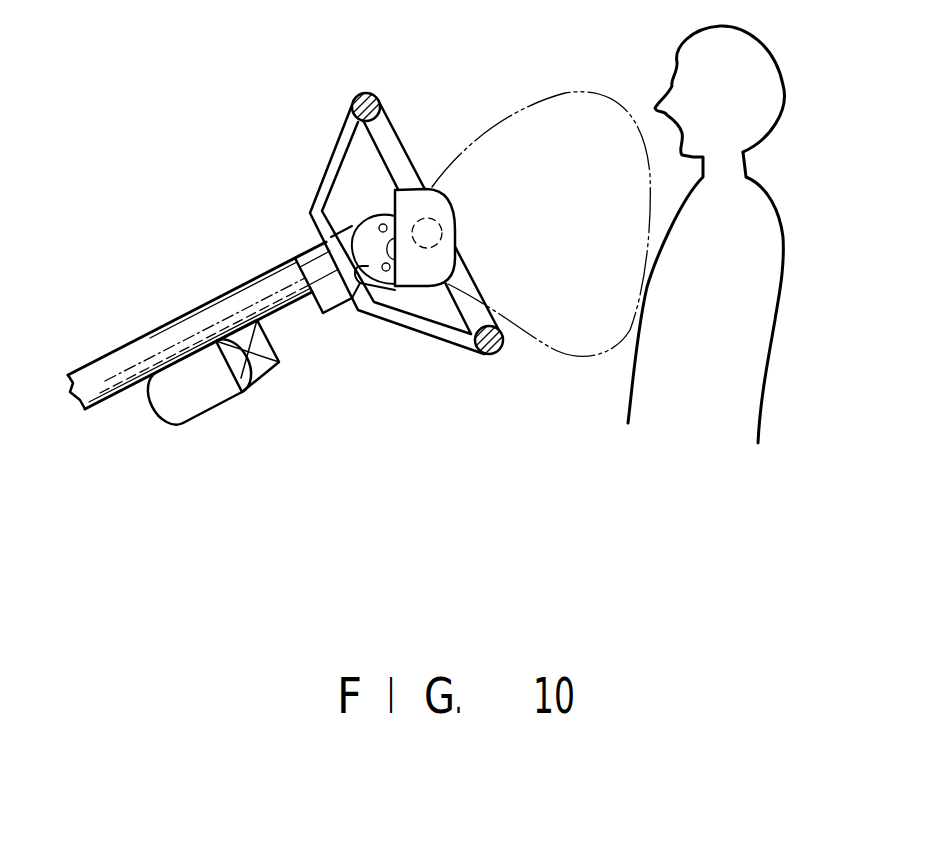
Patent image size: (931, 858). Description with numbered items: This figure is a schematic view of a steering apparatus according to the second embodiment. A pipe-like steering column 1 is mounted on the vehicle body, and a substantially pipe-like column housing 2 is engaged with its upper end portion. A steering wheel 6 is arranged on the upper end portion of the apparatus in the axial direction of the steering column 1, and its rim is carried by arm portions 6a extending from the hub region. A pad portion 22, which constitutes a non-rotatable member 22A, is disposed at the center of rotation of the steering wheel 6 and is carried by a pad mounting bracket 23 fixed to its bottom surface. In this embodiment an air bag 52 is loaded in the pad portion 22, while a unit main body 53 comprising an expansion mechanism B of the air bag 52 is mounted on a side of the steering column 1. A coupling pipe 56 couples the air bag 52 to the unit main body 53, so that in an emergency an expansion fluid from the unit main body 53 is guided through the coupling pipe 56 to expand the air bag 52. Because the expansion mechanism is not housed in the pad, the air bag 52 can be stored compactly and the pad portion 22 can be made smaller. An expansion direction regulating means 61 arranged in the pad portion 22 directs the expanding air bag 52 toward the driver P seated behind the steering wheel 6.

The steering column 1 is at (158, 340).
The column housing 2 is at (310, 268).
The steering wheel 6 is at (366, 92).
The support arm 6a is at (333, 157).
The pad portion 22 is at (413, 189).
The non-rotatable member 22A is at (440, 219).
The pad mounting bracket 23 is at (373, 285).
The air bag 52 is at (422, 253).
The unit main body 53 is at (215, 415).
The coupling pipe 56 is at (274, 340).
The expansion direction regulating means 61 is at (368, 210).
The expansion mechanism B is at (243, 400).
The driver P is at (748, 377).